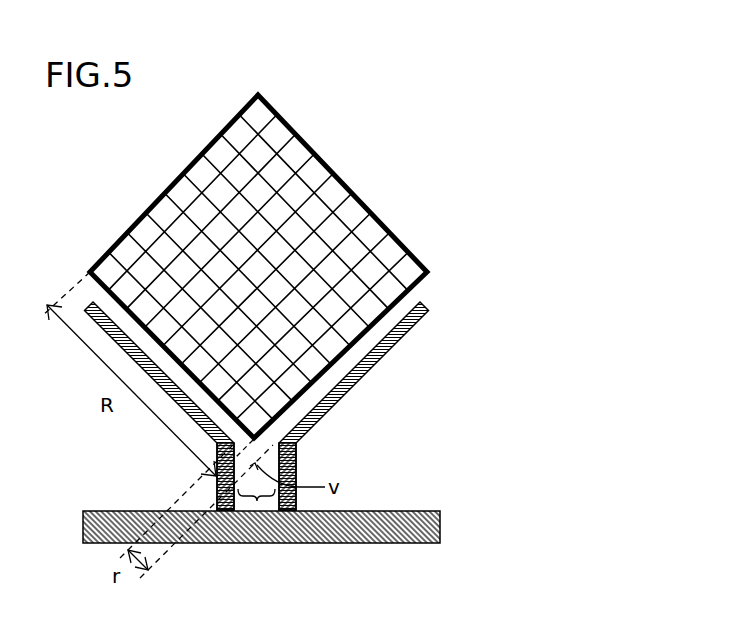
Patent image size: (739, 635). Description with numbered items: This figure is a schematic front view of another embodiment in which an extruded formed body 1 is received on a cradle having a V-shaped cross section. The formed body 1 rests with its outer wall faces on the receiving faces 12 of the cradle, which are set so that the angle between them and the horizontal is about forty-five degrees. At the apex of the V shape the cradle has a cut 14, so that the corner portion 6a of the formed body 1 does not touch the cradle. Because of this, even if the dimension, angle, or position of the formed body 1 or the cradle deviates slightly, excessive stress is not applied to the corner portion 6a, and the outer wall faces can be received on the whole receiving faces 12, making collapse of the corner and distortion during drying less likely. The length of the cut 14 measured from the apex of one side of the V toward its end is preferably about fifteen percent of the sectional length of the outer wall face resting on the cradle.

The formed body 1 is at (362, 160).
The receiving face 12 is at (397, 369).
The corner portion 6a is at (265, 446).
The cut 14 is at (257, 501).